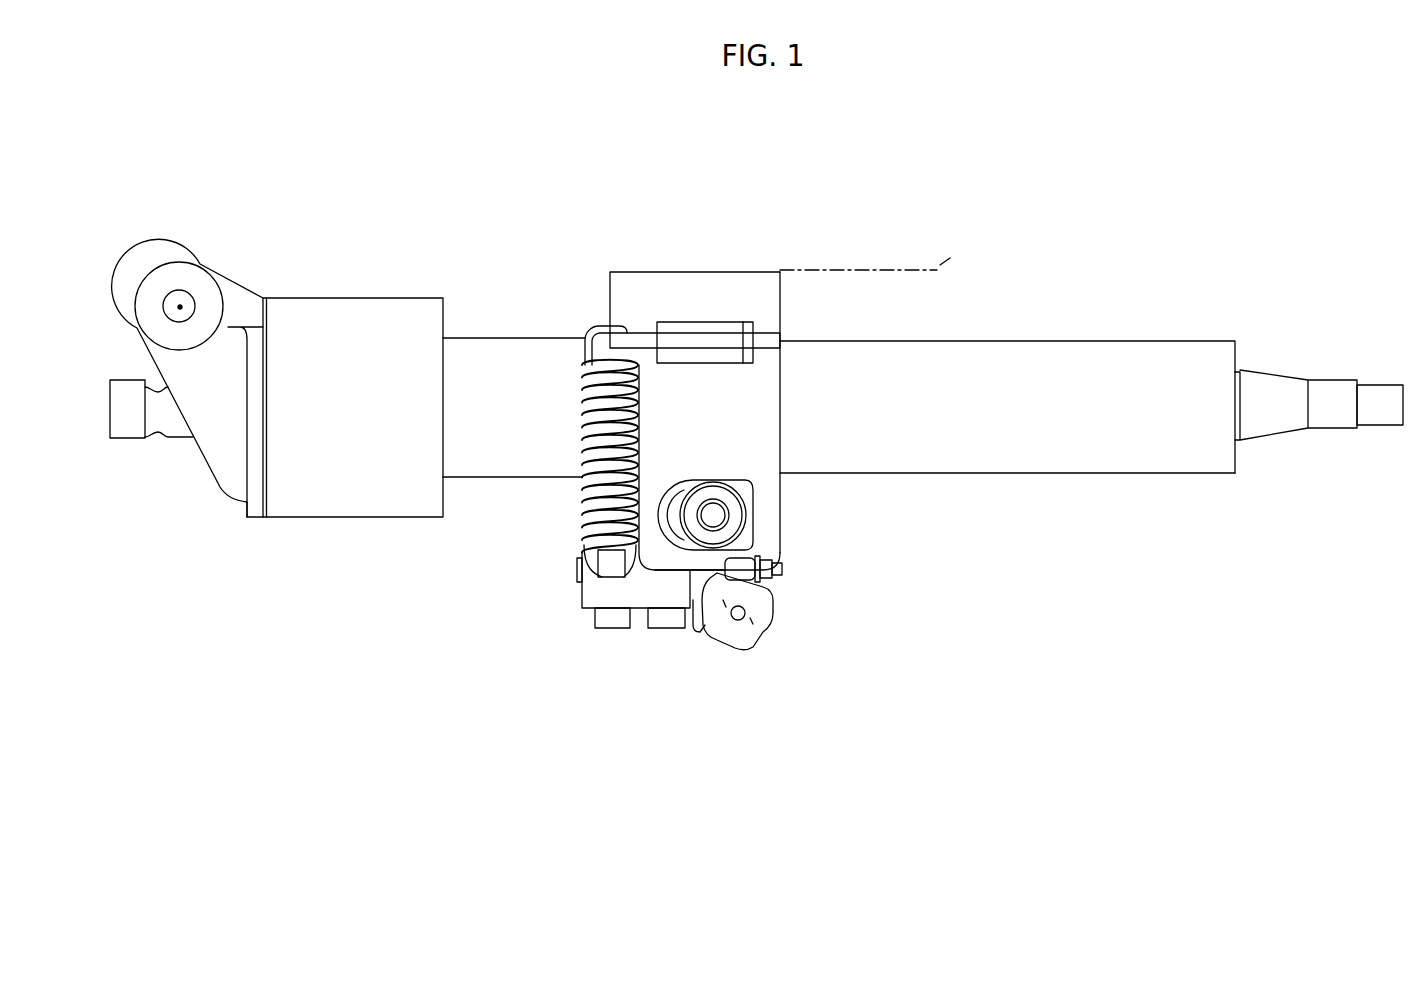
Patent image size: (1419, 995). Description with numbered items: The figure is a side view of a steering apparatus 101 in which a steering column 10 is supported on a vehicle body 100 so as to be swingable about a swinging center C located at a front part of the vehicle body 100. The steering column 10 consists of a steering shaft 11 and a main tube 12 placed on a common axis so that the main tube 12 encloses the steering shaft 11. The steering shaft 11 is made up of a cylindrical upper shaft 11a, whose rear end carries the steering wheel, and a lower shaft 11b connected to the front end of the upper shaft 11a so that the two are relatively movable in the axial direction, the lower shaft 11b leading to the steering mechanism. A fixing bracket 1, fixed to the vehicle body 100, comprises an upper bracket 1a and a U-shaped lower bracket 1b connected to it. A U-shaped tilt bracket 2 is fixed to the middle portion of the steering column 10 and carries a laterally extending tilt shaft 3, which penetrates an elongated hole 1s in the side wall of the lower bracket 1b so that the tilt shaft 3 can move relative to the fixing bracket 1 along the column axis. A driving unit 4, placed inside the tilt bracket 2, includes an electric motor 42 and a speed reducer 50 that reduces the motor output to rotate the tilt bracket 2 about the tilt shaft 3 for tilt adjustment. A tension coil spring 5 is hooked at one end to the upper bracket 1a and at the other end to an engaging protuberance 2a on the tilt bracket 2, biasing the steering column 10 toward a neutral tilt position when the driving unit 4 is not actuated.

The fixing bracket 1 is at (698, 267).
The upper bracket 1a is at (645, 338).
The lower bracket 1b is at (770, 368).
The elongated hole 1s is at (757, 494).
The tilt bracket 2 is at (600, 596).
The engaging protuberance 2a is at (612, 568).
The tilt shaft 3 is at (713, 515).
The driving unit 4 is at (793, 566).
The tension coil spring 5 is at (598, 327).
The steering column 10 is at (962, 337).
The steering shaft 11 is at (1277, 367).
The upper shaft 11a is at (1333, 425).
The lower shaft 11b is at (127, 433).
The main tube 12 is at (1063, 457).
The electric motor 42 is at (740, 637).
The speed reducer 50 is at (742, 570).
The vehicle body 100 is at (853, 267).
The steering apparatus 101 is at (960, 522).
The swinging center C is at (180, 307).